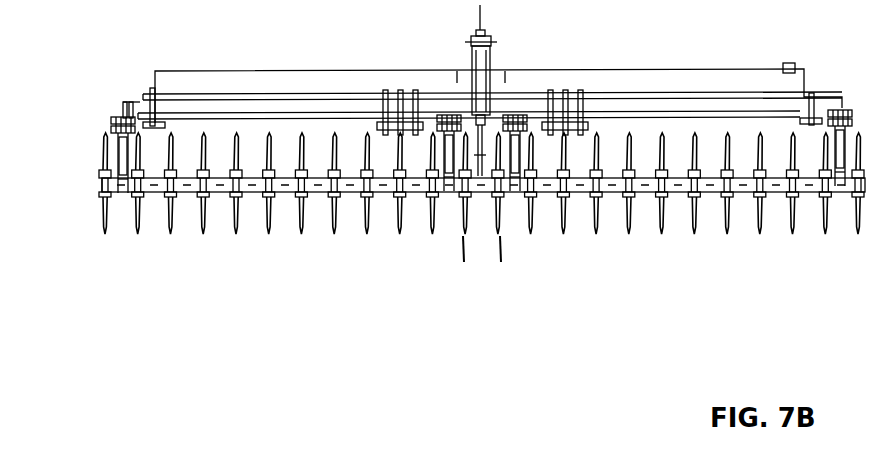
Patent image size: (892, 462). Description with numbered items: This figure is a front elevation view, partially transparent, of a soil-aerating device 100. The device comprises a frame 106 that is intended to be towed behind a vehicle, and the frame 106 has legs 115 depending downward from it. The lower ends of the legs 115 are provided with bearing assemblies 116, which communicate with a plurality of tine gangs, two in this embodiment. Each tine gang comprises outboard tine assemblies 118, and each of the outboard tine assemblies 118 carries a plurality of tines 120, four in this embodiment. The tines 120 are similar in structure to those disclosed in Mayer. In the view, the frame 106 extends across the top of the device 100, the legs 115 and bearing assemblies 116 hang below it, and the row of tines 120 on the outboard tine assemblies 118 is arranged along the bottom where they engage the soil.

The soil-aerating device 100 is at (207, 33).
The frame 106 is at (668, 105).
The legs 115 is at (102, 97).
The bearing assemblies 116 is at (123, 200).
The outboard tine assemblies 118 is at (103, 215).
The tines 120 is at (203, 226).